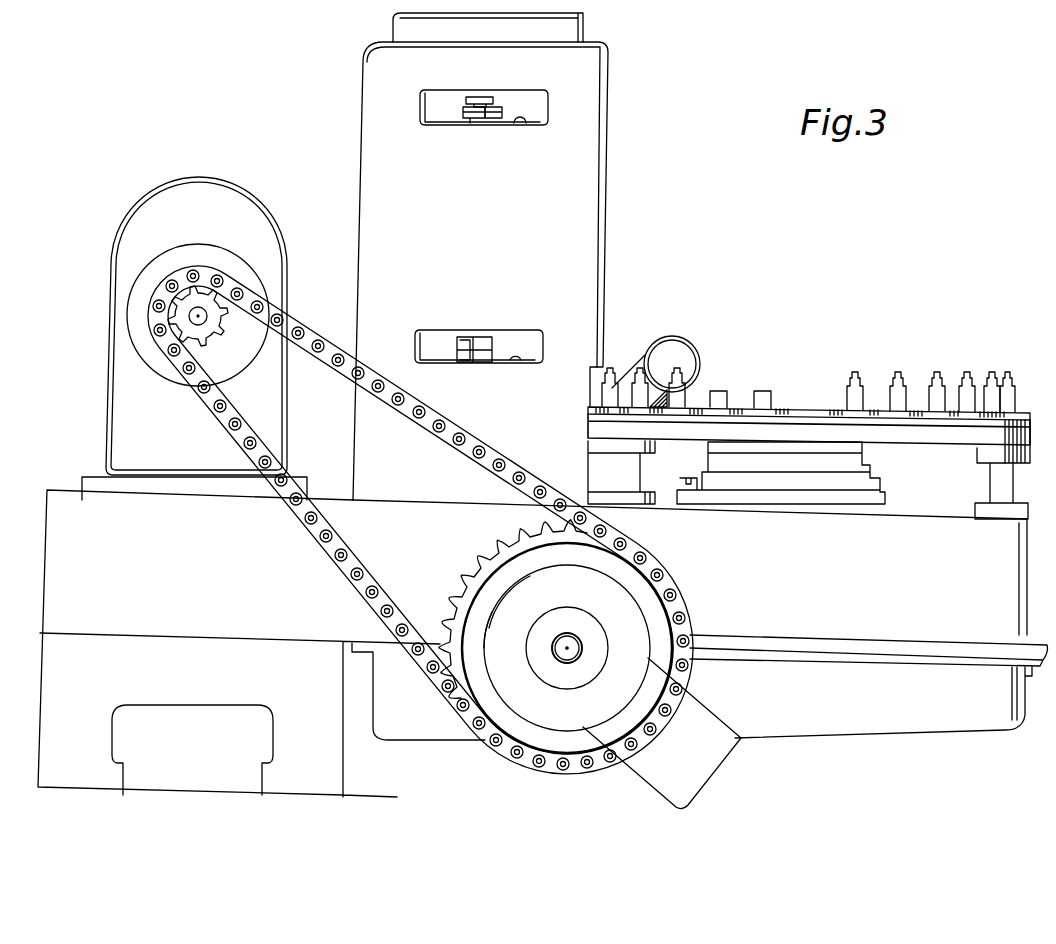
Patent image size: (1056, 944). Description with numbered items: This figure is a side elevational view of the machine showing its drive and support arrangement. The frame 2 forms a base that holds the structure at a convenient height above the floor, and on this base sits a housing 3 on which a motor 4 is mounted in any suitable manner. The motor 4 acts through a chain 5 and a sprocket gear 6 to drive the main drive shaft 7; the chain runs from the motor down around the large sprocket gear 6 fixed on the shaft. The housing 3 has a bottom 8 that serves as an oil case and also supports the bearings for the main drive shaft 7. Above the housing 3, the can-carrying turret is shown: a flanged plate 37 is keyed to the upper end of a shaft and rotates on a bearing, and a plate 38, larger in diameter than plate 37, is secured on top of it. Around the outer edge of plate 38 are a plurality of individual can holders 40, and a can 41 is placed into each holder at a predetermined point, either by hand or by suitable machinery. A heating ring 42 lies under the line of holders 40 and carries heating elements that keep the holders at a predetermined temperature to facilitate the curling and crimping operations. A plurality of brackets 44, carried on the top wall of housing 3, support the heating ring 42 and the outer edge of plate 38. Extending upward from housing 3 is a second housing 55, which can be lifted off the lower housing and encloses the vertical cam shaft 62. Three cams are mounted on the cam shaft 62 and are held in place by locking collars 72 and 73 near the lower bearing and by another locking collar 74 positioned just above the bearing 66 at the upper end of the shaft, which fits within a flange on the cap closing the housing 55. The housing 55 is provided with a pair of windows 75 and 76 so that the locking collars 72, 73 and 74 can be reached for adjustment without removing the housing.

The frame 2 is at (325, 760).
The housing 3 is at (208, 567).
The motor 4 is at (262, 232).
The chain 5 is at (320, 550).
The sprocket gear 6 is at (464, 591).
The main drive shaft 7 is at (570, 650).
The bottom 8 is at (800, 703).
The flanged plate 37 is at (787, 428).
The plate 38 is at (866, 430).
The can holders 40 is at (737, 407).
The can 41 is at (935, 388).
The heating ring 42 is at (920, 441).
The brackets 44 is at (617, 473).
The housing 55 is at (360, 128).
The cam shaft 62 is at (480, 96).
The bearing 66 is at (466, 123).
The locking collar 72 is at (463, 362).
The locking collar 73 is at (493, 338).
The locking collar 74 is at (506, 108).
The window 75 is at (516, 362).
The window 76 is at (524, 124).